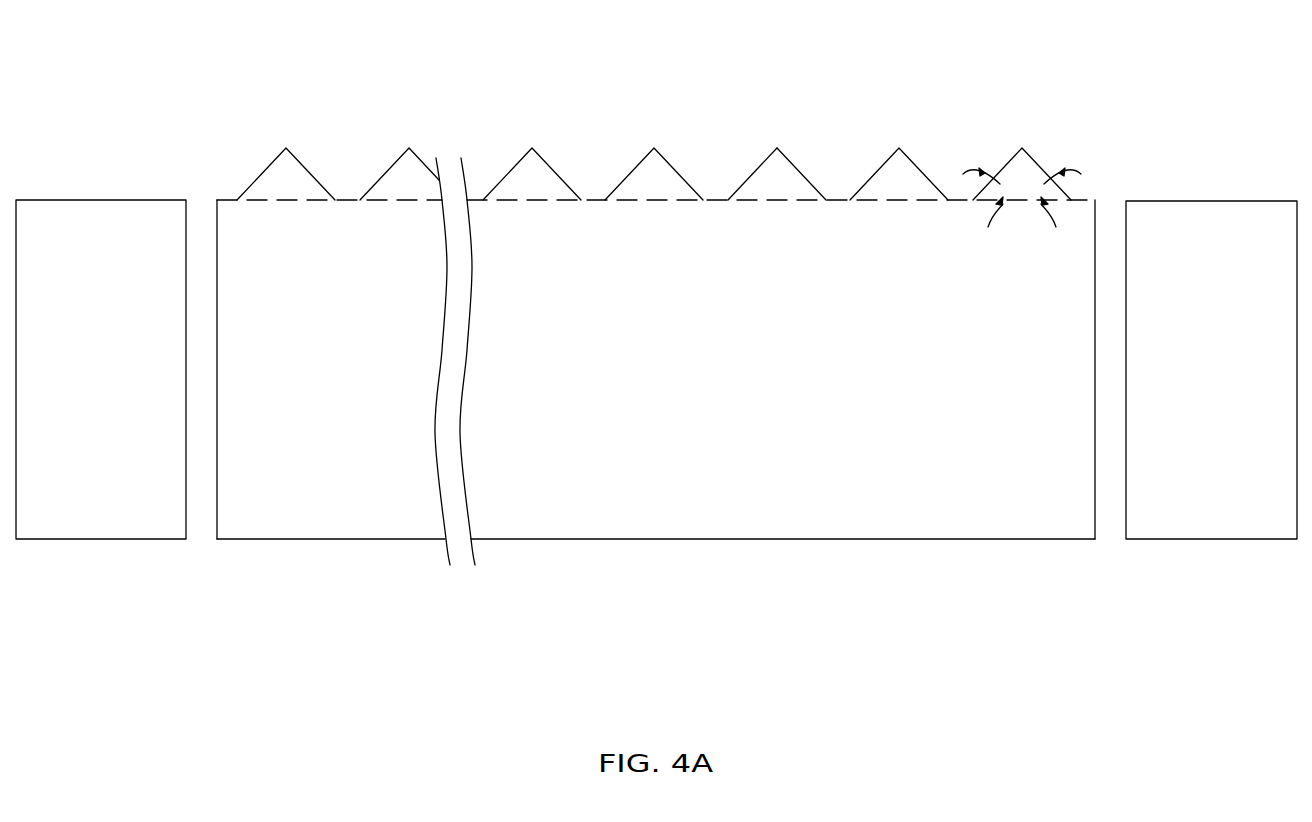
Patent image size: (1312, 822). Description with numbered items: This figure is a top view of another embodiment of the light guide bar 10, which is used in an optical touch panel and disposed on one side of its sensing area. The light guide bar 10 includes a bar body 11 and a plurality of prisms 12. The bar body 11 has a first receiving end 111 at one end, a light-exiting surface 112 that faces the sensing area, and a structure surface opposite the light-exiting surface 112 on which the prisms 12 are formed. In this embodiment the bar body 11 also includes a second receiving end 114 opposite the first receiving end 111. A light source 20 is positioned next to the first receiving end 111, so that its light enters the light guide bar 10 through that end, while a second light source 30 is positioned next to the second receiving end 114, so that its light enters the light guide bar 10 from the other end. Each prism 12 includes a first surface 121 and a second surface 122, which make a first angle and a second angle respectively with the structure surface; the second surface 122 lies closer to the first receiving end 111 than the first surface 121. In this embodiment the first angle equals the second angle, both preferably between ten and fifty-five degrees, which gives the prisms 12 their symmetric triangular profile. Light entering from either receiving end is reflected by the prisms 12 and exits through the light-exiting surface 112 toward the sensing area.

The light guide bar 10 is at (1115, 549).
The bar body 11 is at (923, 515).
The first receiving end 111 is at (1097, 227).
The light-exiting surface 112 is at (777, 541).
The second receiving end 114 is at (217, 515).
The prism 12 is at (836, 75).
The first surface 121 is at (750, 178).
The second surface 122 is at (805, 178).
The light source 20 is at (1143, 228).
The second light source 30 is at (170, 222).